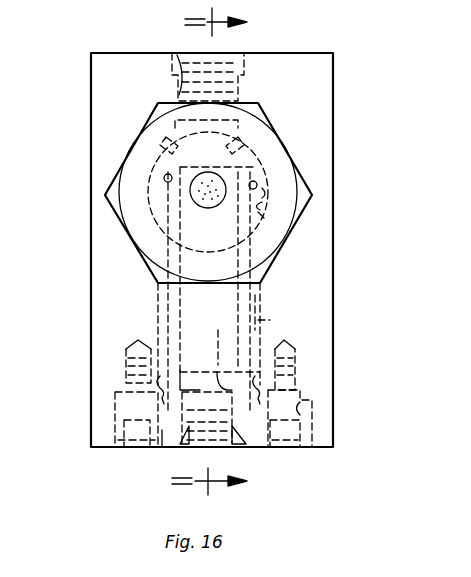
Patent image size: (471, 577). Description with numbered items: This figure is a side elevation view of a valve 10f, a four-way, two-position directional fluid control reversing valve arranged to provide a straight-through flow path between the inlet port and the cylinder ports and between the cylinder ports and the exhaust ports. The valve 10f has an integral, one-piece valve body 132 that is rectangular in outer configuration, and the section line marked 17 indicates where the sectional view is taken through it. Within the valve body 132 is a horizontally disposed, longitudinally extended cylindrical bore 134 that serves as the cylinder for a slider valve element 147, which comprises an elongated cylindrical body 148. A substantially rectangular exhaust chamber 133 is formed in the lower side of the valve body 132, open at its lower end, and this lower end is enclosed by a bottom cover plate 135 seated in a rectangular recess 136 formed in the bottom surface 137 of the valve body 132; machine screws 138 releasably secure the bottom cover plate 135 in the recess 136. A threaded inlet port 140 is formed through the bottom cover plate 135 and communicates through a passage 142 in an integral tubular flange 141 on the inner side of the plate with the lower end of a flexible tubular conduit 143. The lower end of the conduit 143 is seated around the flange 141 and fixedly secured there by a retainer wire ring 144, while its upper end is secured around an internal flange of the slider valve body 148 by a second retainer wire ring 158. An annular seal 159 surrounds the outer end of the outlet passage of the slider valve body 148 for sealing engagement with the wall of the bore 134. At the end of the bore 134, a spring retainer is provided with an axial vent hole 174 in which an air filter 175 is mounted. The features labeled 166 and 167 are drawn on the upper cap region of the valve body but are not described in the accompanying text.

The valve 10f is at (103, 44).
The top cap 167 is at (178, 52).
The upper bar 166 is at (222, 118).
The annular seal 159 is at (250, 143).
The retainer wire ring 158 is at (257, 182).
The slider valve element 147 is at (268, 177).
The cylindrical bore 134 is at (266, 204).
The slider valve body 148 is at (278, 222).
The valve body 132 is at (317, 291).
The exhaust chamber 133 is at (272, 318).
The flexible tubular conduit 143 is at (252, 340).
The tubular flange 141 is at (252, 369).
The rectangular recess 136 is at (312, 397).
The machine screws 138 is at (297, 434).
The retainer wire ring 144 is at (165, 385).
The bottom cover plate 135 is at (117, 413).
The bottom surface 137 is at (162, 452).
The inlet port 140 is at (203, 437).
The passage 142 is at (204, 291).
The vent hole 174 is at (200, 187).
The air filter 175 is at (215, 195).
The section line 17- 17 is at (223, 252).